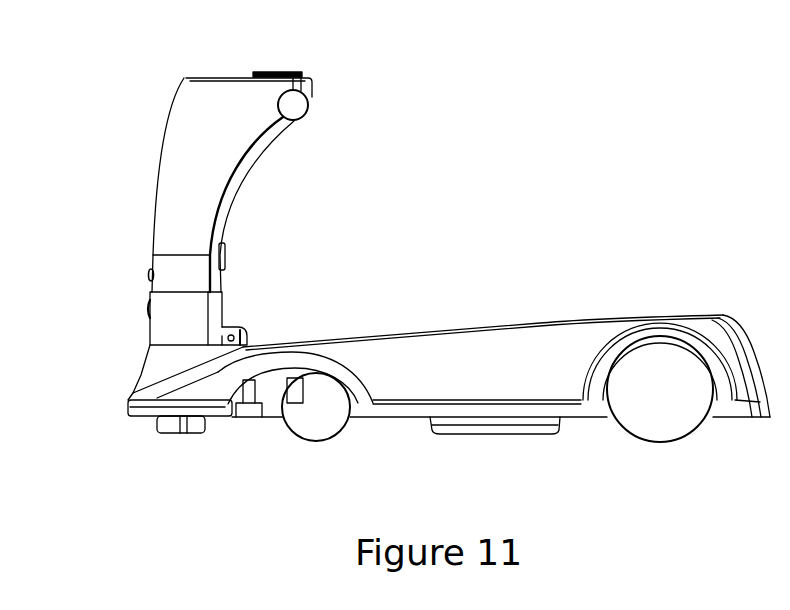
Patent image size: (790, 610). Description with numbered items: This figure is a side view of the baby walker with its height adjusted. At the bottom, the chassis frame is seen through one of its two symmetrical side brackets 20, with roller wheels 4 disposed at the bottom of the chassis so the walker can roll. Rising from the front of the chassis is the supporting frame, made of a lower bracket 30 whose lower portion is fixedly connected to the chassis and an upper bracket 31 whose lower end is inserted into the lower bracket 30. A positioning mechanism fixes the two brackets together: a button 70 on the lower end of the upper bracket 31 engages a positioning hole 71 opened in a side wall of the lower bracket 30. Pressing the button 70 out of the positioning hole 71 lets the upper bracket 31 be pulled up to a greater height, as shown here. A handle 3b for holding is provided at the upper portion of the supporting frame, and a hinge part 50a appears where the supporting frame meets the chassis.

The handle 3b is at (293, 107).
The upper bracket 31 is at (160, 203).
The button 70 is at (150, 270).
The positioning hole 71 is at (150, 310).
The lower bracket 30 is at (153, 353).
The hinge 50a is at (228, 342).
The side bracket 20 is at (512, 358).
The roller wheels 4 is at (315, 423).